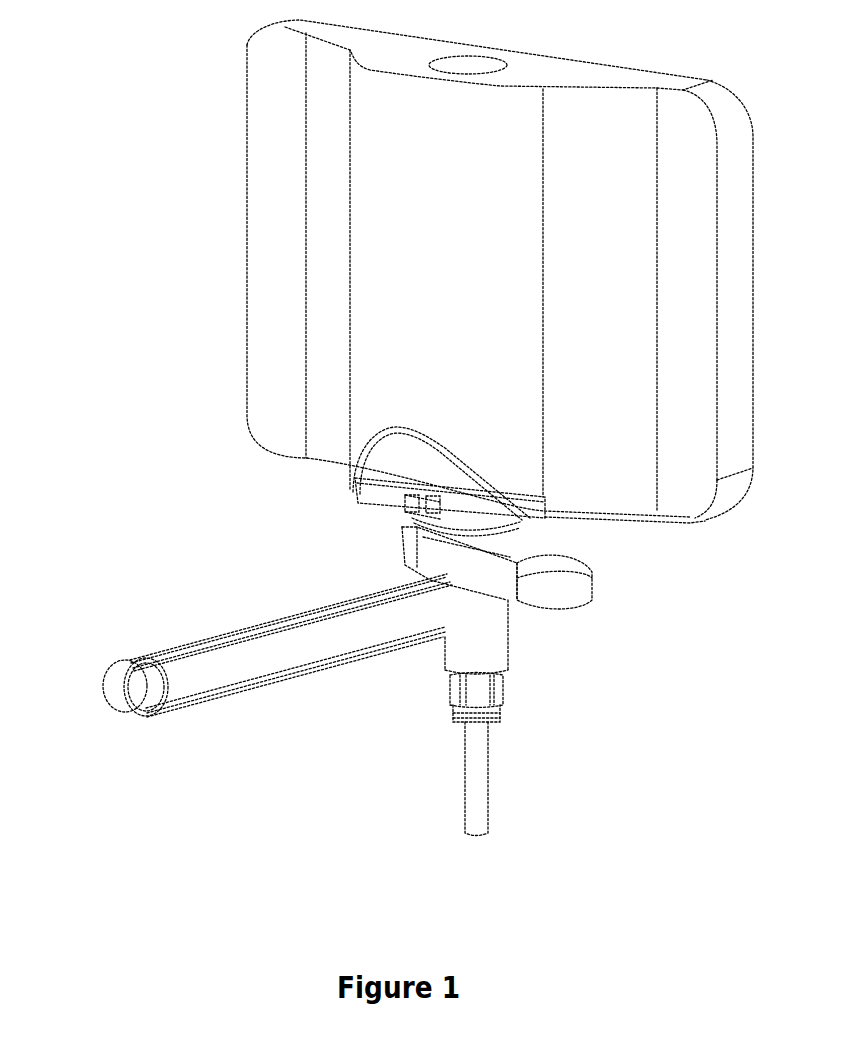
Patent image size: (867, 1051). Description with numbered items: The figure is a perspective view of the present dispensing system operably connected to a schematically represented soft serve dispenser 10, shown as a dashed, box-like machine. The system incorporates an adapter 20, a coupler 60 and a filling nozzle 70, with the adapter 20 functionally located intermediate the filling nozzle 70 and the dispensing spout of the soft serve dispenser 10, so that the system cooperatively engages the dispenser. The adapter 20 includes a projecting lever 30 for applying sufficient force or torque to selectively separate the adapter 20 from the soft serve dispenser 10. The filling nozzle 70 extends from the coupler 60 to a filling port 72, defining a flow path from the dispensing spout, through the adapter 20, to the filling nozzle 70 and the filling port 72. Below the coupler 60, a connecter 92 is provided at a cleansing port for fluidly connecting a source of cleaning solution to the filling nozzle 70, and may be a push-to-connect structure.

The soft serve dispenser 10 is at (723, 102).
The adapter 20 is at (432, 518).
The projecting lever 30 is at (395, 477).
The coupler 60 is at (580, 583).
The filling nozzle 70 is at (255, 677).
The filling port 72 is at (115, 698).
The connecter 92 is at (490, 688).